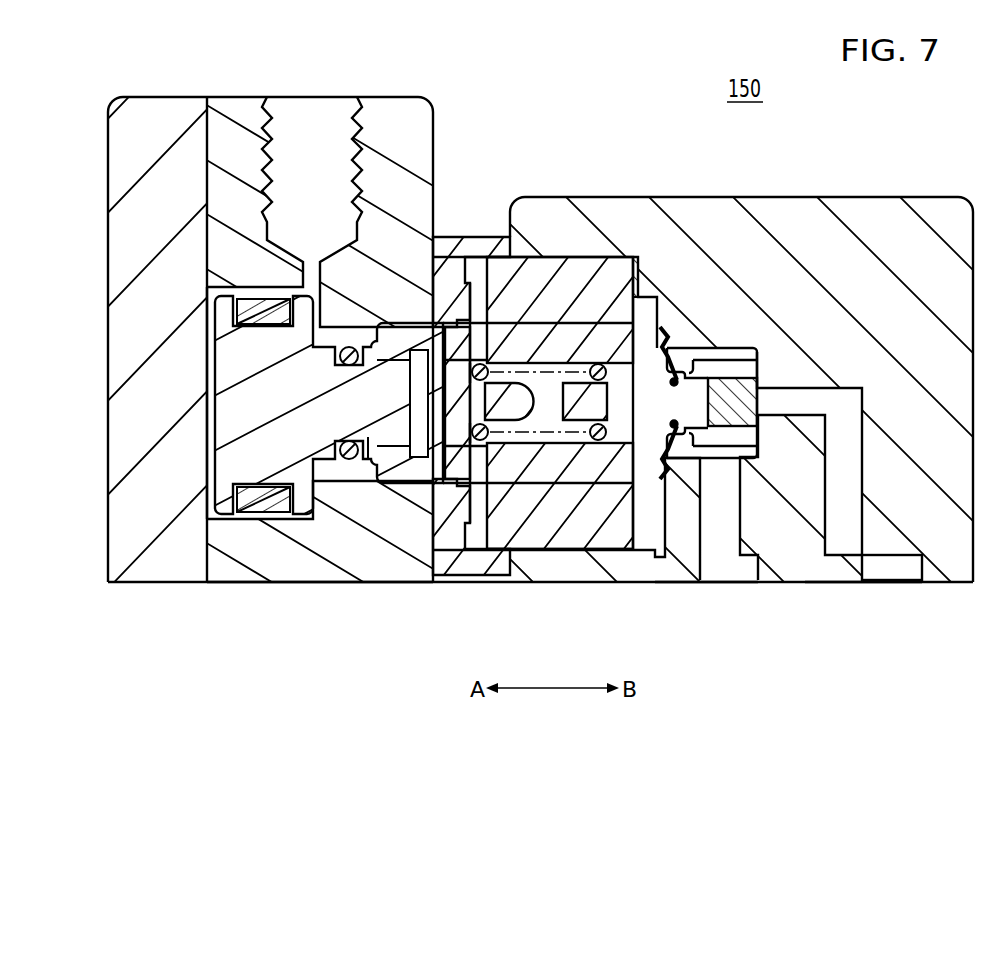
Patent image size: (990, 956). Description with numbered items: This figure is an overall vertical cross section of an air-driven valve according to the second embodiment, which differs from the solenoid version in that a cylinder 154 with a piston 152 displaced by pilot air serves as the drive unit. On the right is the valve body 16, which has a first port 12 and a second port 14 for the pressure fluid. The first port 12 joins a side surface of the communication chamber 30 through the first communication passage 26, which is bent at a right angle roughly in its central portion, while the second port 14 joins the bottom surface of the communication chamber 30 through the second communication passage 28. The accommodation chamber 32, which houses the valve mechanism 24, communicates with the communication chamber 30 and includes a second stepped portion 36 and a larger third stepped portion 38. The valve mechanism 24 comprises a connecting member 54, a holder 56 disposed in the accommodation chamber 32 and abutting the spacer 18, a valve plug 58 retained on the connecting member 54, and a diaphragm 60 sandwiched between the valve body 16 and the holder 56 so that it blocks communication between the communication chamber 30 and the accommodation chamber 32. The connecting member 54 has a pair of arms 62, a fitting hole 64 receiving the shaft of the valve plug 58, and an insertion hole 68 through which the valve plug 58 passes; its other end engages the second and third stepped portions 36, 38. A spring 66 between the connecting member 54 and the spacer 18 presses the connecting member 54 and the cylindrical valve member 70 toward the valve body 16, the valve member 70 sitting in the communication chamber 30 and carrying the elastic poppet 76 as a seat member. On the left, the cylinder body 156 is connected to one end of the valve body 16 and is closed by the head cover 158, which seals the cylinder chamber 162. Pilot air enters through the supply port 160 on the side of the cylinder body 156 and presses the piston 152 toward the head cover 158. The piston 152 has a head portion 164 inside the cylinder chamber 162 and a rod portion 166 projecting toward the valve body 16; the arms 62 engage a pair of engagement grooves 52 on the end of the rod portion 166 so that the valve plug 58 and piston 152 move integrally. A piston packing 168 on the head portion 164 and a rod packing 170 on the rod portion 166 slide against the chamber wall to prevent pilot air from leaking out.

The first port 12 is at (852, 570).
The second port 14 is at (714, 574).
The valve body 16 is at (893, 194).
The spacer 18 is at (453, 255).
The valve mechanism 24 is at (689, 348).
The first communication passage 26 is at (855, 470).
The second communication passage 28 is at (733, 512).
The communication chamber 30 is at (730, 352).
The accommodation chamber 32 is at (563, 535).
The second stepped portion 36 is at (650, 325).
The third stepped portion 38 is at (628, 278).
The engagement grooves 52 is at (396, 363).
The connecting member 54 is at (539, 334).
The holder 56 is at (504, 540).
The valve plug 58 is at (764, 361).
The diaphragm 60 is at (669, 492).
The arms 62 is at (455, 472).
The fitting hole 64 is at (587, 353).
The spring 66 is at (482, 362).
The insertion hole 68 is at (622, 410).
The valve member 70 is at (726, 442).
The poppet 76 is at (750, 402).
The piston 152 is at (218, 473).
The cylinder 154 is at (326, 592).
The cylinder body 156 is at (330, 392).
The head cover 158 is at (118, 252).
The supply port 160 is at (313, 105).
The cylinder chamber 162 is at (312, 483).
The head portion 164 is at (237, 403).
The rod portion 166 is at (368, 462).
The piston packing 168 is at (267, 515).
The rod packing 170 is at (349, 346).